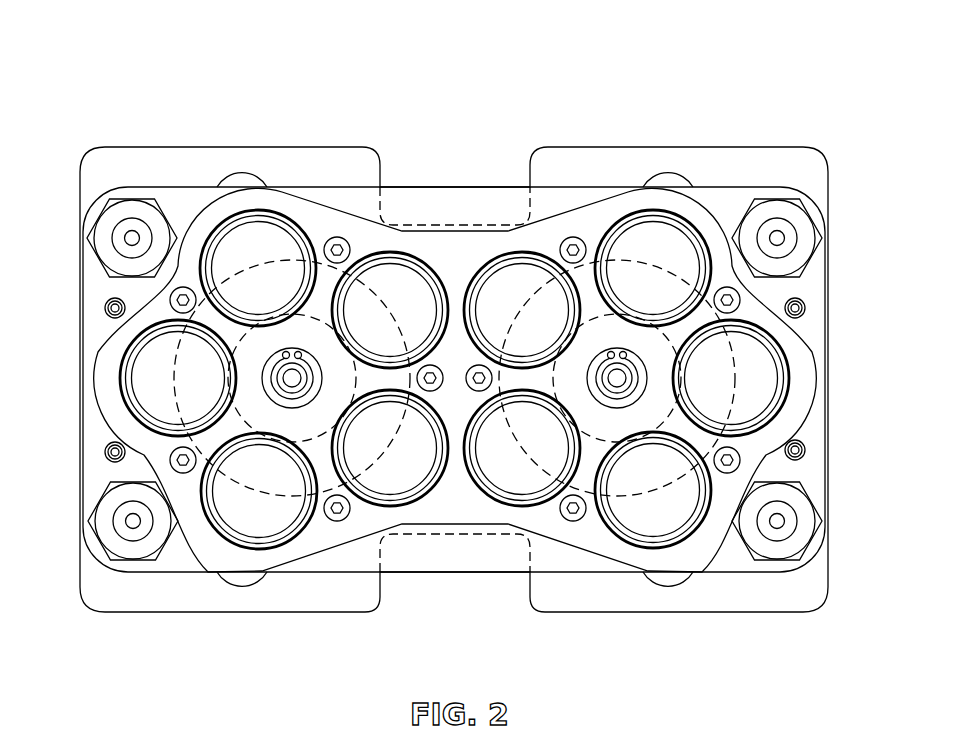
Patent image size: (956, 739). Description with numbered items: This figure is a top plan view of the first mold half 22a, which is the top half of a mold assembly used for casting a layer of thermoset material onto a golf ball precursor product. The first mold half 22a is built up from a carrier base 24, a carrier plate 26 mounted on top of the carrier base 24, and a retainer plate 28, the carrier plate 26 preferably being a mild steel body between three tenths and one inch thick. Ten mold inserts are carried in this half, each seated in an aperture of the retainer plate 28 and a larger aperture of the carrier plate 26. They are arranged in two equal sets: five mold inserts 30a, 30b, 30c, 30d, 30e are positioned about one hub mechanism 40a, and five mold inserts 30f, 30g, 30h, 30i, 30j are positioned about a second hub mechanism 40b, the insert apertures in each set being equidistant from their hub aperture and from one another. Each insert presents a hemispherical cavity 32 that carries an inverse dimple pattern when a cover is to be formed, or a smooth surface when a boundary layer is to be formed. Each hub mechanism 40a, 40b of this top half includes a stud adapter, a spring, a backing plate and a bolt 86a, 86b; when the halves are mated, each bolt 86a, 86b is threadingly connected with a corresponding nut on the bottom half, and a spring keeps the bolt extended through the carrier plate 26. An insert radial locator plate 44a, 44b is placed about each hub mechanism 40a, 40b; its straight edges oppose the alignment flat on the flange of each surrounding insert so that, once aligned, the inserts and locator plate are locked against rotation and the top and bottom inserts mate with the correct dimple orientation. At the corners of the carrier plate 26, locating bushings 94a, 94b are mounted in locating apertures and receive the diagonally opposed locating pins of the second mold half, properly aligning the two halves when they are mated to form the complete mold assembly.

The first mold half 22a is at (452, 341).
The carrier base 24 is at (133, 150).
The carrier plate 26 is at (470, 190).
The retainer plate 28 is at (343, 222).
The mold insert 30a is at (238, 208).
The mold insert 30b is at (413, 253).
The mold insert 30c is at (407, 502).
The mold insert 30d is at (259, 554).
The mold insert 30e is at (122, 378).
The mold insert 30f is at (540, 253).
The mold insert 30g is at (666, 207).
The mold insert 30h is at (791, 374).
The mold insert 30i is at (693, 534).
The mold insert 30j is at (512, 502).
The hemispherical cavity 32 is at (243, 262).
The hub mechanism 40a is at (256, 468).
The hub mechanism 40b is at (634, 290).
The insert radial locator plate 44a is at (297, 332).
The insert radial locator plate 44b is at (623, 428).
The bolt 86a is at (288, 376).
The bolt 86b is at (622, 380).
The locating bushing 94a is at (782, 220).
The locating bushing 94b is at (133, 537).